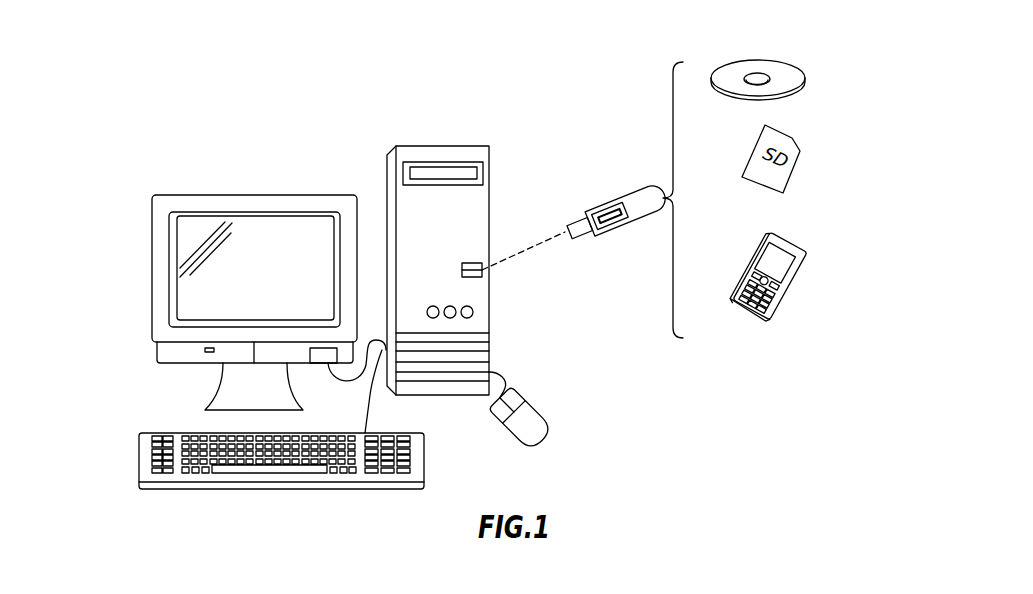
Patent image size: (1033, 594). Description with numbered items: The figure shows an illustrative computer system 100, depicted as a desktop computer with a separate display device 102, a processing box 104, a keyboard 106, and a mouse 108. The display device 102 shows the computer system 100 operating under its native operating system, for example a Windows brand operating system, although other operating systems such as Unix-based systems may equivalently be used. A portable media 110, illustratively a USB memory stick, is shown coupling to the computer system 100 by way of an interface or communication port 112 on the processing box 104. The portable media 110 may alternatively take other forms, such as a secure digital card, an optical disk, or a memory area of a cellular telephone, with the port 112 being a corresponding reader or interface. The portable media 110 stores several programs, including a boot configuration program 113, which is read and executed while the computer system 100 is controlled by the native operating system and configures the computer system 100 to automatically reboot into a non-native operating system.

The computer system 100 is at (155, 104).
The display device 102 is at (182, 195).
The processing box 104 is at (424, 147).
The keyboard 106 is at (138, 458).
The mouse 108 is at (550, 418).
The portable media 110 is at (637, 190).
The communication port 112 is at (471, 262).
The boot configuration program 113 is at (615, 223).